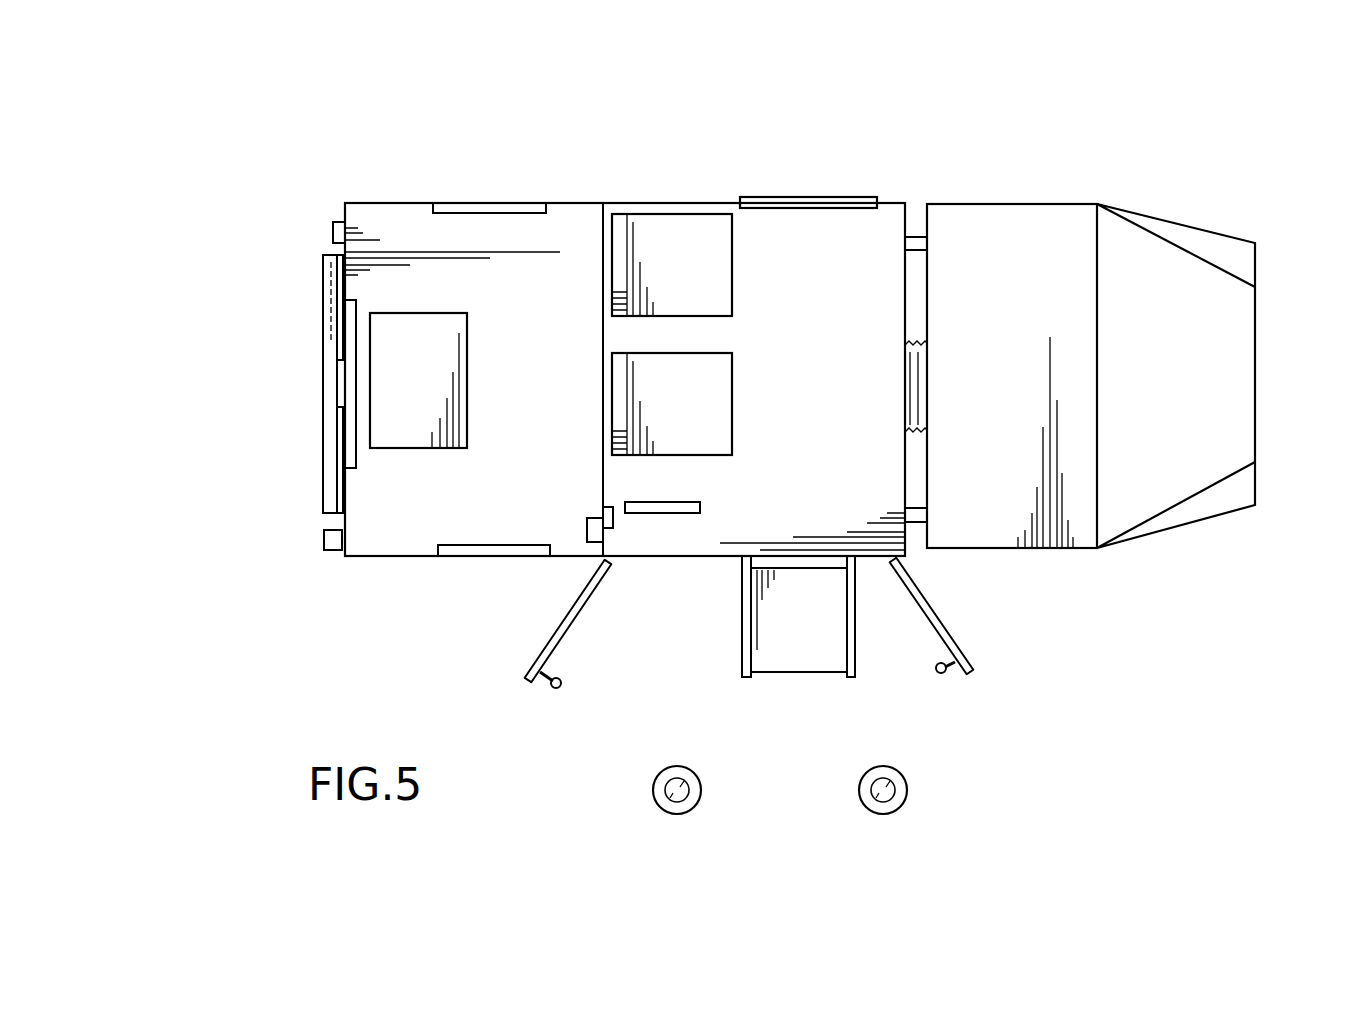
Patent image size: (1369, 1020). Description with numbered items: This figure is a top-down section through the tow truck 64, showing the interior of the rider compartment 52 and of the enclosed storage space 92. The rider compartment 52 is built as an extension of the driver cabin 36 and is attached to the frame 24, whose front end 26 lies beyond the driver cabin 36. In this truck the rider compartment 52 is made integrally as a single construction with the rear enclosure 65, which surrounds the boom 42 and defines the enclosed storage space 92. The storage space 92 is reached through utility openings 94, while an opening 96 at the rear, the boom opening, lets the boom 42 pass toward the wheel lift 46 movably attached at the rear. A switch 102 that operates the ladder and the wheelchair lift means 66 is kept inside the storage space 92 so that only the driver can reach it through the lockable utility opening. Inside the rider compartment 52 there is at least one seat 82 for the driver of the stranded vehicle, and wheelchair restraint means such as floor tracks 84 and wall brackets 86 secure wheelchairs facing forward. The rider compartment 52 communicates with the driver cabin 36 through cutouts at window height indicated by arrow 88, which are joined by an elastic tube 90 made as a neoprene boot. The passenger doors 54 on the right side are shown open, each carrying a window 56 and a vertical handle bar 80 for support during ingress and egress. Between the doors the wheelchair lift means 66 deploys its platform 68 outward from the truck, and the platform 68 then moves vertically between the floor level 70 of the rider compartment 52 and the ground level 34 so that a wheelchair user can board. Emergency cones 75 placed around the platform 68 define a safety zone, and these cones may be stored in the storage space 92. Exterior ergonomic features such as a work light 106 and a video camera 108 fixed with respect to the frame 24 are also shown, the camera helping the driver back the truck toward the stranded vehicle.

The tow truck 64 is at (221, 90).
The rider compartment 52 is at (643, 148).
The rear enclosure 65 is at (572, 203).
The utility openings 94 is at (466, 212).
The video camera 108 is at (333, 233).
The wheel lift 46 is at (323, 325).
The boom opening 96 is at (352, 445).
The boom 42 is at (443, 338).
The enclosed storage space 92 is at (540, 402).
The work light 106 is at (320, 538).
The ground level 34 is at (383, 654).
The switch 102 is at (585, 532).
The wall brackets 86 is at (613, 517).
The floor tracks 84 is at (688, 510).
The seat 82 is at (703, 293).
The floor level 70 is at (836, 265).
The window 56 is at (800, 198).
The frame 24 is at (915, 225).
The driver cabin 36 is at (1013, 222).
The front end 26 is at (1262, 418).
The elastic tube 90 is at (913, 365).
The cutout direction arrow 88 is at (862, 425).
The passenger doors 54 is at (585, 608).
The vertical handle bars 80 is at (560, 688).
The wheelchair lift means 66 is at (725, 631).
The platform 68 is at (794, 646).
The emergency cones 75 is at (690, 810).